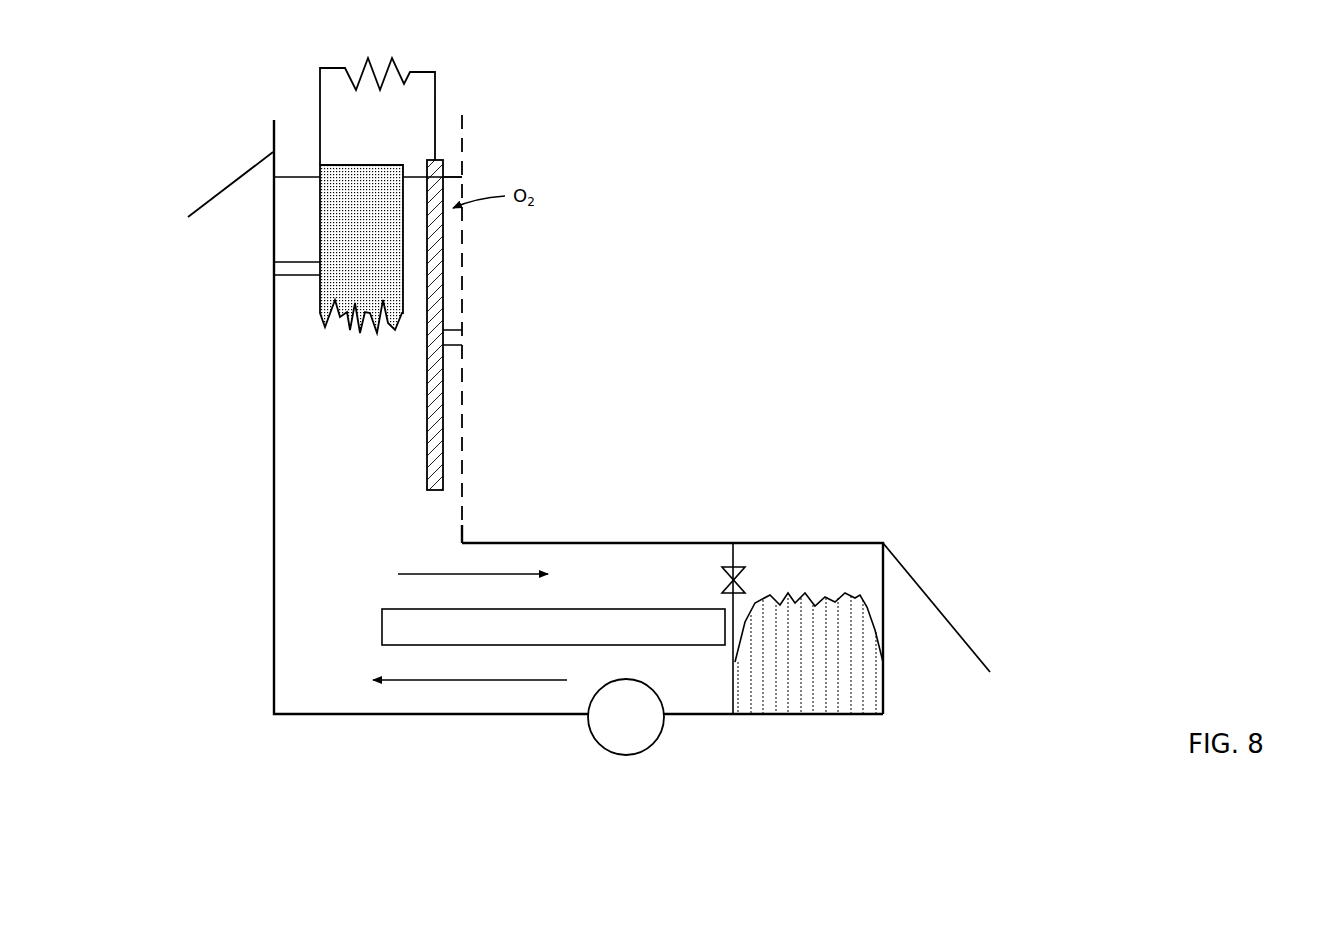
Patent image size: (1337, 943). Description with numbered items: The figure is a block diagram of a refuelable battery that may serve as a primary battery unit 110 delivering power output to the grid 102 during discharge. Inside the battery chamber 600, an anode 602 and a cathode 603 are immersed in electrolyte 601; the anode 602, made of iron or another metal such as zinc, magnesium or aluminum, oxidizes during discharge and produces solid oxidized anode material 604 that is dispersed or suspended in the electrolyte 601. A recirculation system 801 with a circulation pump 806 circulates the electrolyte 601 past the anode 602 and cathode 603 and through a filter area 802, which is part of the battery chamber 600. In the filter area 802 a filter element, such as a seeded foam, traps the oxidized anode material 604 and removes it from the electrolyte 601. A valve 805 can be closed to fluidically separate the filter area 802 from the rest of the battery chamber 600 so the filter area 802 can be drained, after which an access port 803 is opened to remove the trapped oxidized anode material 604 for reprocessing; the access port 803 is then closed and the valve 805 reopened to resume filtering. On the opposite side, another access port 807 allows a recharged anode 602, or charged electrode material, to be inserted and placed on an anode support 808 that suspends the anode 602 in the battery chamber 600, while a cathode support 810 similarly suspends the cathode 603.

The grid 102 is at (433, 46).
The battery unit 110 is at (532, 62).
The battery chamber 600 is at (462, 140).
The electrolyte 601 is at (290, 445).
The anode 602 is at (380, 259).
The cathode 603 is at (442, 307).
The oxidized anode material 604 is at (828, 683).
The recirculation system 801 is at (523, 537).
The filter area 802 is at (812, 543).
The access port 803 is at (953, 625).
The valve 805 is at (733, 567).
The circulation pump 806 is at (646, 727).
The access port 807 is at (244, 173).
The anode support 808 is at (298, 275).
The cathode support 810 is at (447, 347).